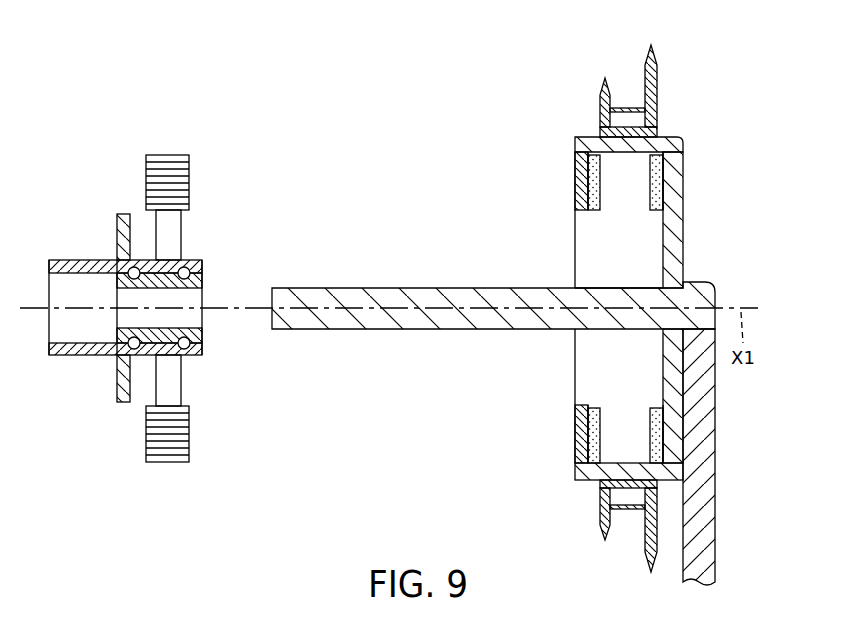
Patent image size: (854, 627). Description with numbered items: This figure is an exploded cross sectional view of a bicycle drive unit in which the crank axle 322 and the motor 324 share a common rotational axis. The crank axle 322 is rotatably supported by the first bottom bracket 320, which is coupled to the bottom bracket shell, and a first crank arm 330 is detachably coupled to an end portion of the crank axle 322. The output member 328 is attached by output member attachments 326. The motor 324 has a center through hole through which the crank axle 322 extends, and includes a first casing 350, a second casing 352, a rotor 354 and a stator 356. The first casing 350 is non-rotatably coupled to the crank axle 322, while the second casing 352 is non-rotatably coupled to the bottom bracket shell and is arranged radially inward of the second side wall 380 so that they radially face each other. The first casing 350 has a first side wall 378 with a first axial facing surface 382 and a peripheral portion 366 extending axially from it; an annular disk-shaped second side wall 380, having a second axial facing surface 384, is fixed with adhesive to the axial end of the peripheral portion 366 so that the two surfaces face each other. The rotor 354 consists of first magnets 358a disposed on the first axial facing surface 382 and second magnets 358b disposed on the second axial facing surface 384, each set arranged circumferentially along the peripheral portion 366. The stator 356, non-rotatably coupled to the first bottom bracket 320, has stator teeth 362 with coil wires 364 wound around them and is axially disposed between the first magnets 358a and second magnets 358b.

The first bottom bracket 320 is at (72, 358).
The crank axle 322 is at (403, 331).
The motor 324 is at (232, 85).
The output member attachments 326 is at (628, 101).
The output member 328 is at (609, 55).
The first crank arm 330 is at (718, 525).
The first casing 350 is at (686, 227).
The second casing 352 is at (118, 232).
The rotor 354 is at (617, 225).
The stator 356 is at (207, 153).
The first magnets 358a is at (660, 188).
The second magnets 358b is at (585, 188).
The stator teeth 362 is at (176, 230).
The coil wires 364 is at (177, 176).
The peripheral portion 366 is at (598, 141).
The first side wall 378 is at (672, 250).
The second side wall 380 is at (580, 203).
The first axial facing surface 382 is at (656, 160).
The second axial facing surface 384 is at (592, 166).